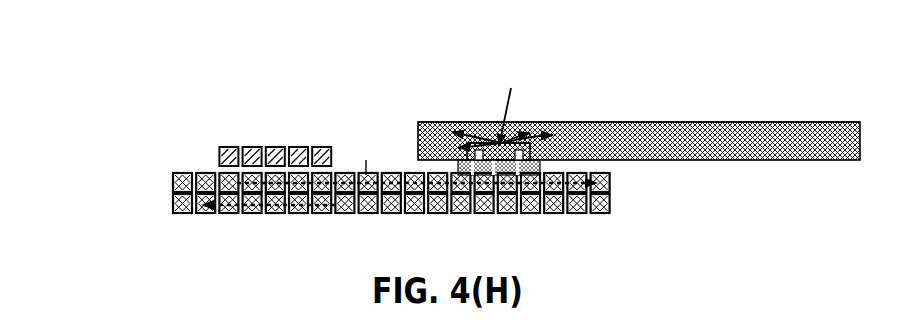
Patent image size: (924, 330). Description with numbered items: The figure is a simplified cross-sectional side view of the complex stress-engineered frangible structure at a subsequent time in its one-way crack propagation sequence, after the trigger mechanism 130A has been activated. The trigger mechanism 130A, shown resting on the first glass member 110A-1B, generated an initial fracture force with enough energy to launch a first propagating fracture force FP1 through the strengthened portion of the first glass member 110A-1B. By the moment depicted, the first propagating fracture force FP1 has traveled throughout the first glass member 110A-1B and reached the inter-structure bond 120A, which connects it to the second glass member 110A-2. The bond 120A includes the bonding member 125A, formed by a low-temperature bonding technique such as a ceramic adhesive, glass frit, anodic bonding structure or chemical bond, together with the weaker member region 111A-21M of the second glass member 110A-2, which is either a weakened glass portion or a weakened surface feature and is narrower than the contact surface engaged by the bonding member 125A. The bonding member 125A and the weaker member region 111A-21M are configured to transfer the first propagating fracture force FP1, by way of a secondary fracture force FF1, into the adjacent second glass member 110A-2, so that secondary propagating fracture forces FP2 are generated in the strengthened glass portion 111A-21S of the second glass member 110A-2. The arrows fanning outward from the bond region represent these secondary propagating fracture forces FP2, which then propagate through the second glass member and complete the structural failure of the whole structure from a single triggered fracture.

The first substrate electrode array 110A-1B is at (168, 172).
The trigger mechanism 130A is at (268, 130).
The second glass member 110A-2 is at (414, 116).
The strengthened glass portion 111A-21S is at (697, 142).
The weaker member region 111A-21M is at (524, 130).
The inter-structure bond 120A is at (489, 130).
The bonding member 125A is at (541, 165).
The secondary propagating fracture forces FP2 is at (481, 119).
The secondary fracture force FF1 is at (516, 106).
The first propagating fracture force FP1 is at (370, 157).